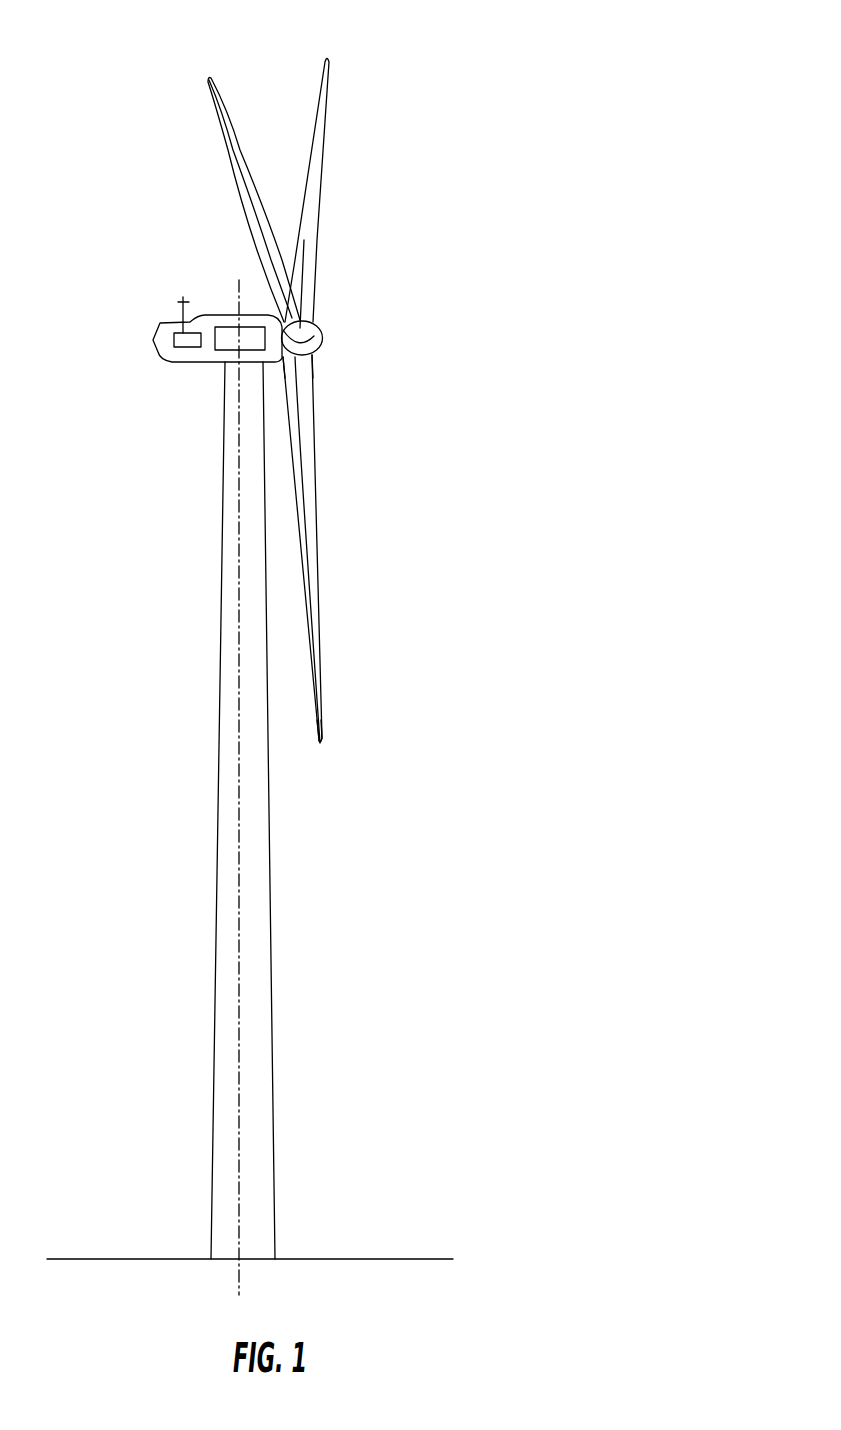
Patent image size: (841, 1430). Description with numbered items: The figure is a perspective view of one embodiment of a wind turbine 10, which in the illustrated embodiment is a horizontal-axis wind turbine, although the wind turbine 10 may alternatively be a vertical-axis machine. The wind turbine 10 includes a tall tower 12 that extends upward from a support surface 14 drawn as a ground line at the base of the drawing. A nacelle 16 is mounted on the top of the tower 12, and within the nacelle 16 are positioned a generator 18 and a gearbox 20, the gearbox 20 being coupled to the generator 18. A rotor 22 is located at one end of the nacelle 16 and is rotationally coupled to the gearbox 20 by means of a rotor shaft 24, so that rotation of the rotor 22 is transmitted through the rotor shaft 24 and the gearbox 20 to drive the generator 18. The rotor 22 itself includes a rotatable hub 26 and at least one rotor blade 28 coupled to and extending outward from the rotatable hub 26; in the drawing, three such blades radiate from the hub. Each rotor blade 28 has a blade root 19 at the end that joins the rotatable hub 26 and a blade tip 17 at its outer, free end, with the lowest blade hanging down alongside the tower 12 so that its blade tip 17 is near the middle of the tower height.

The wind turbine 10 is at (455, 92).
The tower 12 is at (216, 949).
The support surface 14 is at (131, 1259).
The nacelle 16 is at (178, 364).
The blade tip 17 is at (323, 738).
The generator 18 is at (178, 332).
The blade root 19 is at (313, 378).
The gearbox 20 is at (220, 326).
The rotor 22 is at (328, 315).
The rotor shaft 24 is at (273, 340).
The rotatable hub 26 is at (323, 346).
The rotor blade 28 is at (228, 150).